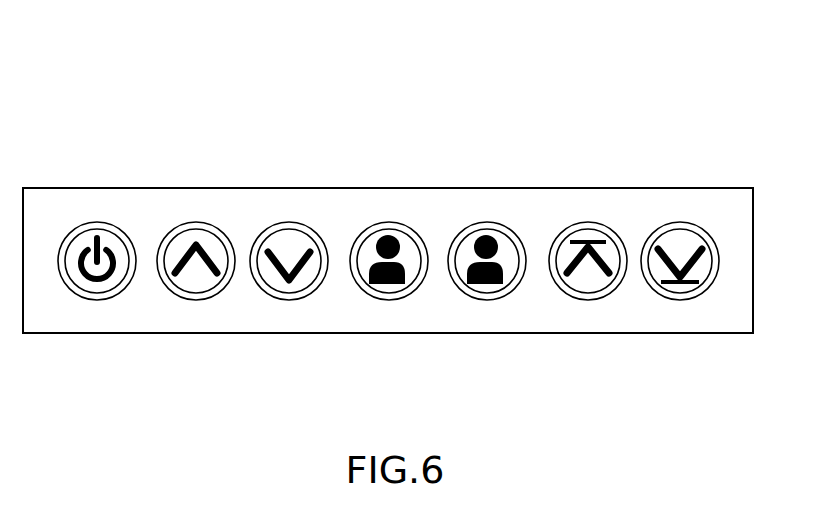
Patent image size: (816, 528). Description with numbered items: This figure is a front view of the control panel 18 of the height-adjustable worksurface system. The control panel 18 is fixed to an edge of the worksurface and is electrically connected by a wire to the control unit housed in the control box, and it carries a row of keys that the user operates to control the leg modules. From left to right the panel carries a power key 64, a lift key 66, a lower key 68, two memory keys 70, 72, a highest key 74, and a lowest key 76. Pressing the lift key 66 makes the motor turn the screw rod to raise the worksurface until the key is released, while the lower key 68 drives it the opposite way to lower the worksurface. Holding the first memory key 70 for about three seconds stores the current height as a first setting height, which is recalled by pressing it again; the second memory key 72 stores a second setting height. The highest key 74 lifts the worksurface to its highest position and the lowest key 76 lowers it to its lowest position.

The control panel 18 is at (543, 201).
The power key 64 is at (97, 229).
The lift key 66 is at (196, 229).
The lower key 68 is at (289, 229).
The first memory key 70 is at (389, 229).
The second memory key 72 is at (487, 229).
The highest key 74 is at (603, 230).
The lowest key 76 is at (686, 229).